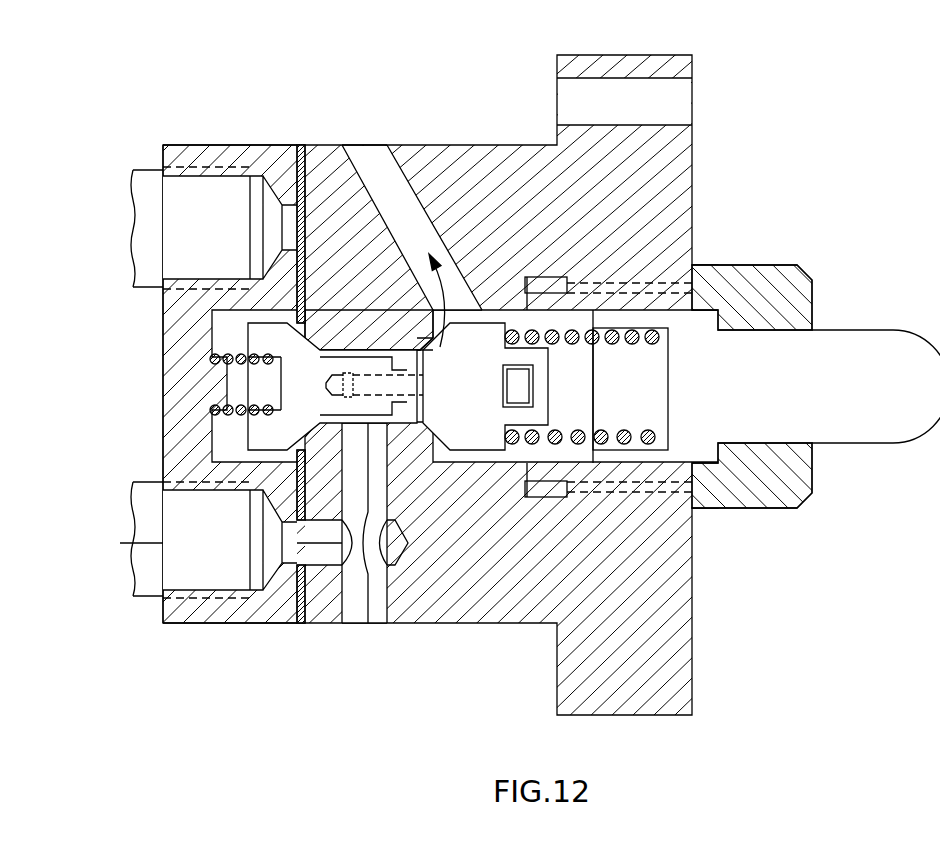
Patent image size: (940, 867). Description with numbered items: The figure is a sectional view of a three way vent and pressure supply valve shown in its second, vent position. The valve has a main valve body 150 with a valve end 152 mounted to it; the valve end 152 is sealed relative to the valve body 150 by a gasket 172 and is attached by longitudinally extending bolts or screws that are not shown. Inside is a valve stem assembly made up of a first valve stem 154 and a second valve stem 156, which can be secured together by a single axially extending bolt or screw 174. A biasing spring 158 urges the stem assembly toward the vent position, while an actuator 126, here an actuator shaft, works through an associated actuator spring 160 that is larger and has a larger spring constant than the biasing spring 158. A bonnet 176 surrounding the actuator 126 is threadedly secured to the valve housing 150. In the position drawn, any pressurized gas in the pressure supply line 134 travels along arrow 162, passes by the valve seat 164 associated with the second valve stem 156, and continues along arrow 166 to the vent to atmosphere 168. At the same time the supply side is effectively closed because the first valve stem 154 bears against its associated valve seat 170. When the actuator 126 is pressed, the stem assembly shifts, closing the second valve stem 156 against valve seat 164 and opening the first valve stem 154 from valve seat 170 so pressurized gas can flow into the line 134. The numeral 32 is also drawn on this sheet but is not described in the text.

The inlet port tube 32 is at (130, 228).
The actuator shaft 126 is at (878, 366).
The pressure supply line 134 is at (133, 510).
The main valve body 150 is at (574, 225).
The valve end 152 is at (283, 144).
The first valve stem 154 is at (288, 445).
The second valve stem 156 is at (488, 445).
The biasing spring 158 is at (213, 411).
The actuator spring 160 is at (655, 442).
The arrow 162 is at (126, 545).
The valve seat 164 is at (428, 349).
The arrow 166 is at (447, 283).
The vent to atmosphere 168 is at (377, 155).
The valve seat 170 is at (307, 338).
The gasket 172 is at (302, 625).
The bolt or screw 174 is at (535, 385).
The bonnet 176 is at (805, 270).